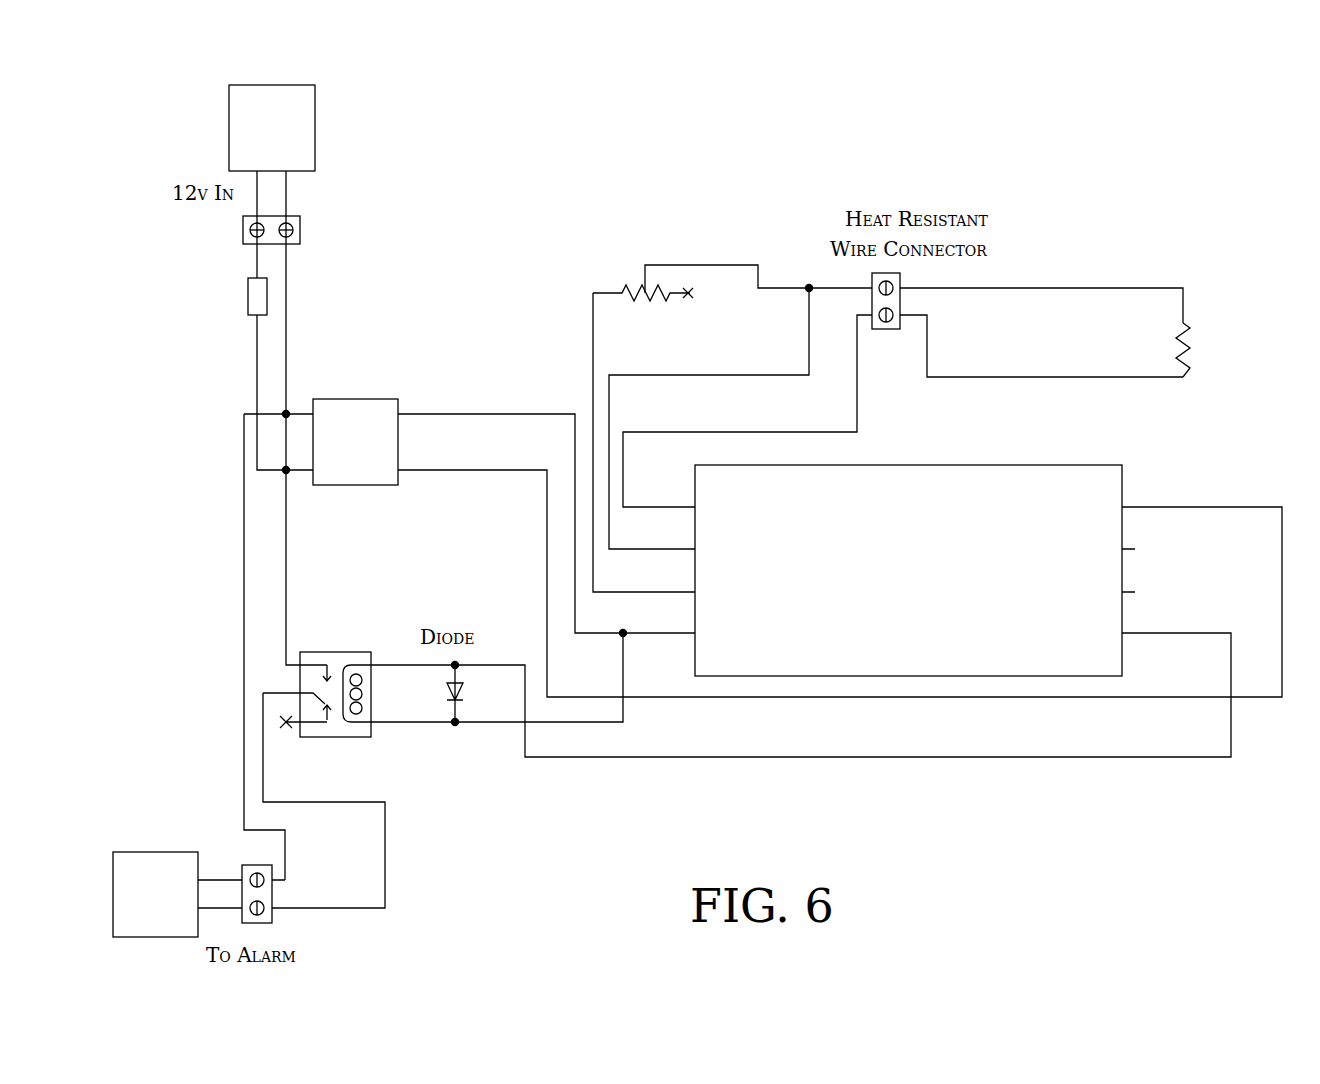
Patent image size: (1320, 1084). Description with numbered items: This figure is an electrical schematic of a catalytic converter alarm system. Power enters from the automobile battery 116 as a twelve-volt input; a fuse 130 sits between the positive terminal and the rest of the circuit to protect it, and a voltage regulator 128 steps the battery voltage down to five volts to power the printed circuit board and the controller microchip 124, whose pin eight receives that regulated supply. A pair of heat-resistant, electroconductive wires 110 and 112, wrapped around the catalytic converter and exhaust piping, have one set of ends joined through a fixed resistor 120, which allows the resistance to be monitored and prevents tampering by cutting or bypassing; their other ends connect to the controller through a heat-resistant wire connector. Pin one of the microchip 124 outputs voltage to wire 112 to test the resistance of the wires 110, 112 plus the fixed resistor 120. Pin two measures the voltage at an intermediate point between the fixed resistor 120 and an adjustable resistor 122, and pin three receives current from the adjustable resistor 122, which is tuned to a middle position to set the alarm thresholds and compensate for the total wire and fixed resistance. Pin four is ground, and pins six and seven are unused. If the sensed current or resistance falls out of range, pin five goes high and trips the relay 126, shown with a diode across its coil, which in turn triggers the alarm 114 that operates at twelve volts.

The heat-resistant, electroconductive wire 110 is at (1058, 288).
The heat-resistant, electroconductive wire 112 is at (1058, 377).
The alarm 114 is at (155, 852).
The battery 116 is at (254, 85).
The resistor 120 is at (1192, 343).
The adjustable resistor 122 is at (622, 292).
The processor unit 124 is at (1047, 465).
The relay 126 is at (353, 652).
The voltage regulator 128 is at (358, 485).
The fuse 130 is at (248, 296).